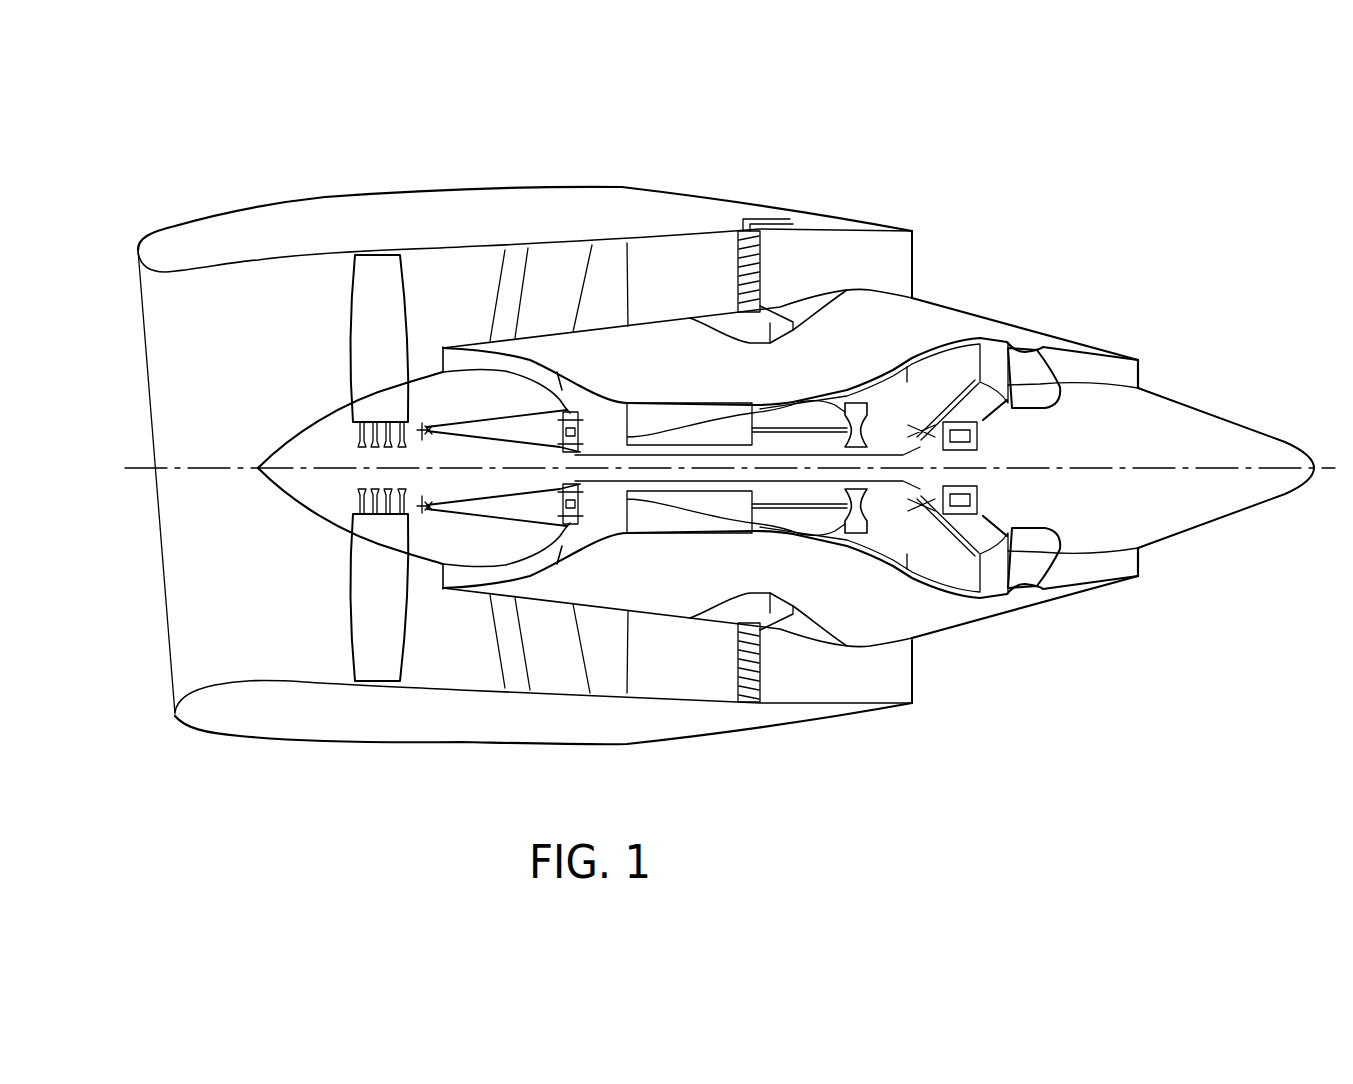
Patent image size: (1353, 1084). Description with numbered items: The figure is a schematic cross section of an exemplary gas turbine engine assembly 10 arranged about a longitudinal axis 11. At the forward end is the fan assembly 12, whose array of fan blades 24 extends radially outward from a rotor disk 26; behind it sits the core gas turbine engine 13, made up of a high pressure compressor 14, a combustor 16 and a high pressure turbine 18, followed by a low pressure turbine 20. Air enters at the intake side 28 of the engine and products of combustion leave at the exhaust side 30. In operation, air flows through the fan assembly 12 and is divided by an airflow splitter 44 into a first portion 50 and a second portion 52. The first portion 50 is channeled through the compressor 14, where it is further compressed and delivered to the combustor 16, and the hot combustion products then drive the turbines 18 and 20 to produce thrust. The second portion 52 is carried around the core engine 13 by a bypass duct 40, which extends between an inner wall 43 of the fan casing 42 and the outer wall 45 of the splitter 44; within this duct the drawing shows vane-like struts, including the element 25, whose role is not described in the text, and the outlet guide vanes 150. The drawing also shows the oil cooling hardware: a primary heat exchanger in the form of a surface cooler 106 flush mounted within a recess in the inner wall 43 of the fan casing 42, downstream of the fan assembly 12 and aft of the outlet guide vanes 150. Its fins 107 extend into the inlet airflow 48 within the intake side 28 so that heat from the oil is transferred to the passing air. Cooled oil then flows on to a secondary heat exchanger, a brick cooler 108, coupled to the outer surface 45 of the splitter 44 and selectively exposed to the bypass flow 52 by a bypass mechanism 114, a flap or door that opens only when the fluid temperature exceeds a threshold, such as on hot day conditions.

The gas turbine engine assembly 10 is at (1088, 228).
The longitudinal axis 11 is at (207, 473).
The fan assembly 12 is at (388, 606).
The core gas turbine engine 13 is at (1033, 323).
The high pressure compressor 14 is at (640, 413).
The combustor 16 is at (817, 405).
The high pressure turbine 18 is at (857, 537).
The low pressure turbine 20 is at (943, 357).
The fan blades 24 is at (377, 310).
The outlet guide vane 25 is at (515, 262).
The rotor disk 26 is at (373, 523).
The intake side 28 is at (175, 656).
The exhaust side 30 is at (948, 250).
The bypass duct 40 is at (694, 305).
The fan casing 42 is at (620, 187).
The inner wall 43 is at (148, 266).
The airflow splitter 44 is at (650, 613).
The outer wall 45 is at (957, 307).
The inlet airflow 48 is at (188, 578).
The first portion 50 is at (453, 359).
The second portion 52 is at (453, 323).
The surface cooler 106 is at (770, 273).
The fins 107 is at (752, 680).
The secondary heat exchanger 108 is at (783, 333).
The bypass mechanism 114 is at (790, 307).
The outlet guide vanes 150 is at (608, 272).